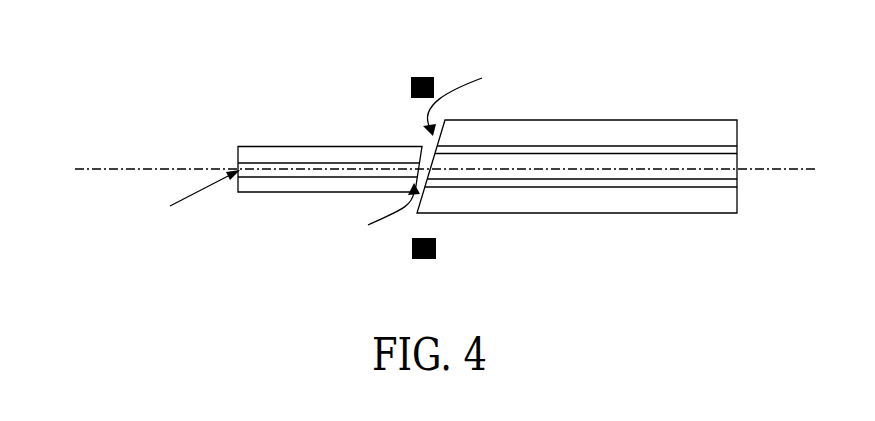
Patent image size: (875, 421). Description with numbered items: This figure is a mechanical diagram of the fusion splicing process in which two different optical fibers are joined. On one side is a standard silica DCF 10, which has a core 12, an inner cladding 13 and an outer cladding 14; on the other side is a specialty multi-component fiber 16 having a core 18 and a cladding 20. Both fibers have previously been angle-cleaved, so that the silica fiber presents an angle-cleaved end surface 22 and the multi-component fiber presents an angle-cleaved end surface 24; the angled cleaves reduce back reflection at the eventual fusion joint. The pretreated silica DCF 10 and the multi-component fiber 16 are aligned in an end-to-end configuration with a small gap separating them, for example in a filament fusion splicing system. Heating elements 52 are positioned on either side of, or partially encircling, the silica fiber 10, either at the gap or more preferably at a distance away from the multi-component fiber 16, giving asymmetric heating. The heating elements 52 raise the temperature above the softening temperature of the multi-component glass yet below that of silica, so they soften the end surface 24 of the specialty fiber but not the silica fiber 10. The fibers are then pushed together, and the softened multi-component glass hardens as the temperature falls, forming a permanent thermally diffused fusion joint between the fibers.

The silica DCF 10 is at (625, 134).
The core 12 is at (737, 167).
The inner cladding 13 is at (718, 183).
The outer cladding 14 is at (737, 135).
The specialty multi-component fiber 16 is at (297, 159).
The core 18 is at (188, 201).
The cladding 20 is at (262, 182).
The angle-cleaved end surface 22 is at (470, 96).
The angle-cleaved end surface 24 is at (376, 213).
The heating elements 52 is at (436, 250).